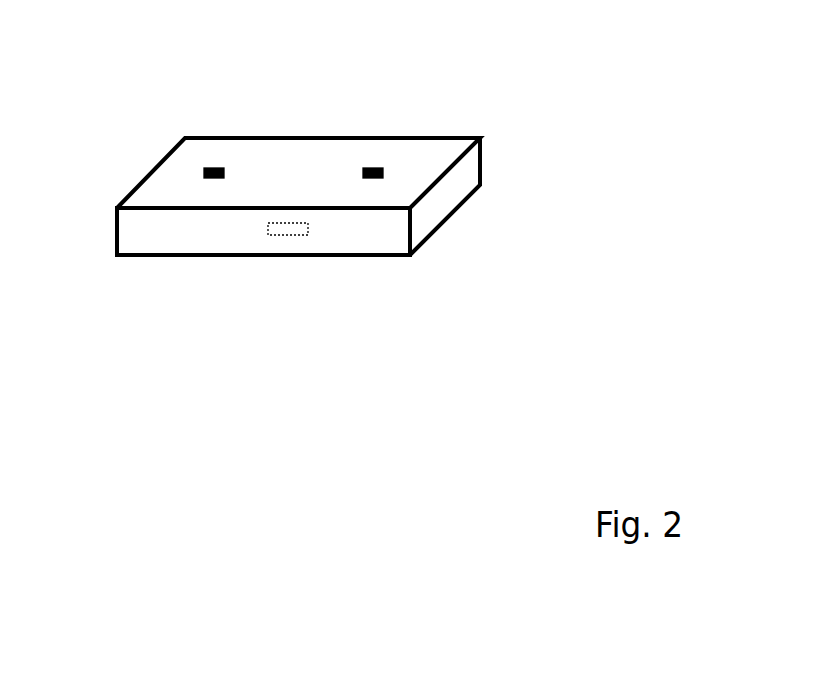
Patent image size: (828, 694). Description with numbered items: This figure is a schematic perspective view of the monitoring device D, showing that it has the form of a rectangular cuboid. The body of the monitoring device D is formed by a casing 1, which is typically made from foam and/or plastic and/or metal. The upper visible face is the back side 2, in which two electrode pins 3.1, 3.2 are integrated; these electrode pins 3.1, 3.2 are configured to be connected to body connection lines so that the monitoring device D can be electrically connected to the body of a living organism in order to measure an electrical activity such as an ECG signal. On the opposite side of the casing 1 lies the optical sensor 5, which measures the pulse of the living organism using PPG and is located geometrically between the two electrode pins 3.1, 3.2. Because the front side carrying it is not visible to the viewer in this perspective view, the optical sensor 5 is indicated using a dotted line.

The casing 1 is at (455, 185).
The back side 2 is at (180, 177).
The first electrode pin 3.1 is at (213, 167).
The second electrode pin 3.2 is at (373, 167).
The optical sensor 5 is at (285, 233).
The monitoring device D is at (462, 83).